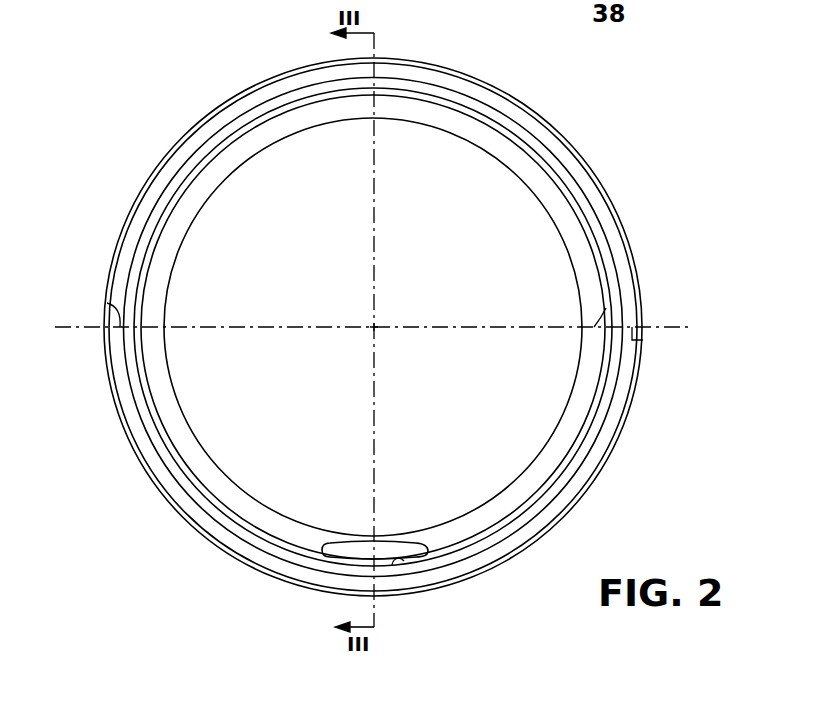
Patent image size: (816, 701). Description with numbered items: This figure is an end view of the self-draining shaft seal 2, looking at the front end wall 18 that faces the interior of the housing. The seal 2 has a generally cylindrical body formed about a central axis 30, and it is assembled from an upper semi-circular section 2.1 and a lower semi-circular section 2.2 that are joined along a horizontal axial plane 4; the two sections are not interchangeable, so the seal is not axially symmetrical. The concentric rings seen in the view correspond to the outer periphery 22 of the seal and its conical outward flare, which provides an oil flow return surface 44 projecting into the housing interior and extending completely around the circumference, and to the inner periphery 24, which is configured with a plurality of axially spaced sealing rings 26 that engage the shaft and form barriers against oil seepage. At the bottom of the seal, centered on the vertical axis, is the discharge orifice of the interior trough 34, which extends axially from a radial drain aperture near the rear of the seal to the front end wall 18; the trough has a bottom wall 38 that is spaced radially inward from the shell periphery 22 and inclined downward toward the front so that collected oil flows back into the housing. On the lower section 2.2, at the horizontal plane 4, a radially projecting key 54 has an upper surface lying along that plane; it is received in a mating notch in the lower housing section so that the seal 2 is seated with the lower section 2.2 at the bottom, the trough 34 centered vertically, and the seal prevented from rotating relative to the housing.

The self-draining shaft seal 2 is at (122, 392).
The upper semi-circular section 2.1 is at (280, 90).
The lower semi-circular section 2.2 is at (188, 532).
The horizontal axial plane 4 is at (107, 303).
The front end wall 18 is at (142, 208).
The outer periphery 22 is at (166, 131).
The inner periphery 24 is at (253, 170).
The sealing rings 26 is at (183, 222).
The axis 30 is at (378, 323).
The interior trough 34 is at (357, 556).
The bottom wall 38 is at (400, 563).
The oil flow return surface 44 is at (555, 145).
The key 54 is at (634, 333).